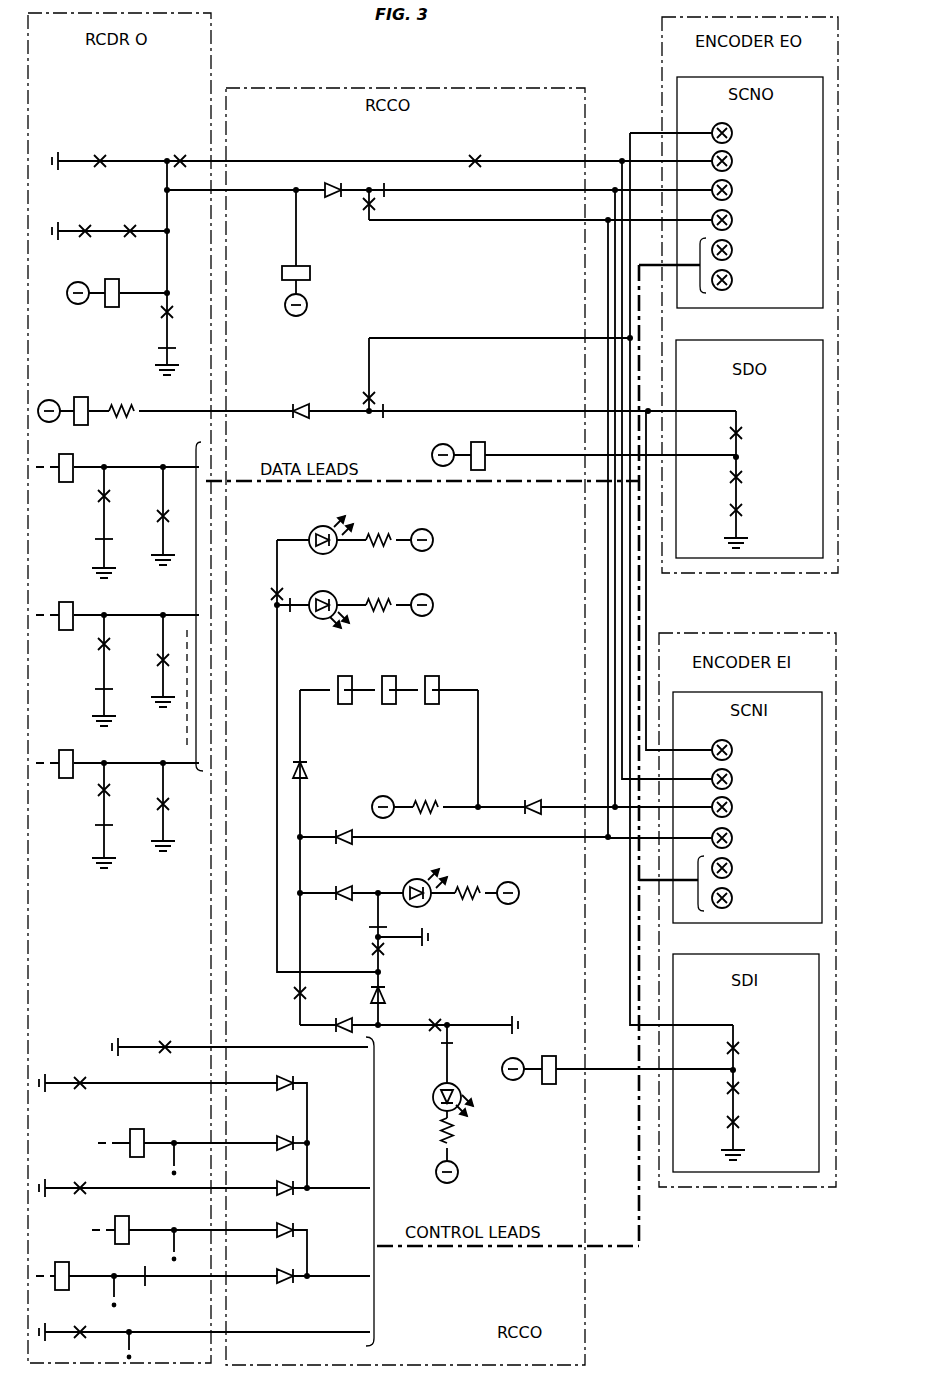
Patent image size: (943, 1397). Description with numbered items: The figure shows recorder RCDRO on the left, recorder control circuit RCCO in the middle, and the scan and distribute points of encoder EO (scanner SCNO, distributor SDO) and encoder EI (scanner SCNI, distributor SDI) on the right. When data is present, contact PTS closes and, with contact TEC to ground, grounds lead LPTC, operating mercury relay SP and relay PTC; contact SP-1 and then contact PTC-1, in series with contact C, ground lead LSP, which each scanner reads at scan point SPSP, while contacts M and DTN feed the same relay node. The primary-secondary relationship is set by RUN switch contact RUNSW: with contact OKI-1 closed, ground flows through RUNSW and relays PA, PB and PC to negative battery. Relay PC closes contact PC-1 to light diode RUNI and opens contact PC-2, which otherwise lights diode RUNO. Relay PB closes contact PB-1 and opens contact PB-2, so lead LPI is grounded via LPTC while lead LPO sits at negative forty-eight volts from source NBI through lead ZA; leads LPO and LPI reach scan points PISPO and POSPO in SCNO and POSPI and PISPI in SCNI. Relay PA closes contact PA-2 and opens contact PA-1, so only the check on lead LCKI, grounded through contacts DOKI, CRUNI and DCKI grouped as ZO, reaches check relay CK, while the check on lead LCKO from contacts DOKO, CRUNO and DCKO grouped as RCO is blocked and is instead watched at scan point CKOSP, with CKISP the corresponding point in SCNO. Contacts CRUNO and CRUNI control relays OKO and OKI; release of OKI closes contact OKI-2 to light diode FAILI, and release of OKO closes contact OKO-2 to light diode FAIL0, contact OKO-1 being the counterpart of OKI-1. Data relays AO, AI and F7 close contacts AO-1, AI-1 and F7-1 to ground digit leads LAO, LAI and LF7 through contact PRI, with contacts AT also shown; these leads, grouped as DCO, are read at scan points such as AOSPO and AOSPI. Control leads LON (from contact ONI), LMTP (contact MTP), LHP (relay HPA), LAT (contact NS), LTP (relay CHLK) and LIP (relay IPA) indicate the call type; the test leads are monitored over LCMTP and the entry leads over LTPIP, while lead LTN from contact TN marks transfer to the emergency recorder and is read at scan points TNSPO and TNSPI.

The C contact C is at (109, 151).
The PTC-1 contact PTC-1 is at (180, 149).
The LSP lead LSP is at (438, 460).
The SP-1 contact SP-1 is at (473, 148).
The LPTC lead LPTC is at (244, 181).
The PB-2 contact PB-2 is at (404, 182).
The LPO lead LPO is at (631, 489).
The M contact M is at (109, 221).
The DTN contact DTN is at (129, 220).
The PTC relay PTC is at (118, 283).
The PTS contact PTS is at (183, 312).
The TEC contact TEC is at (151, 357).
The signal present relay SP is at (283, 253).
The PB-1 contact PB-1 is at (364, 207).
The LPI lead LPI is at (540, 519).
The LCKI lead LCKI is at (551, 579).
The PA-2 contact PA-2 is at (348, 387).
The check relay CK is at (86, 400).
The PA-1 contact PA-1 is at (377, 423).
The LCKO lead LCKO is at (623, 571).
The DCKO contact DCKO is at (760, 434).
The CRUNO contact CRUNO is at (767, 478).
The DOKO contact DOKO is at (761, 511).
The RCO cable RCO is at (673, 430).
The OKO relay OKO is at (584, 446).
The AO relay AO is at (117, 458).
The LAO lead LAO is at (172, 455).
The AO contact AO-1 is at (119, 522).
The PRI contact PRI is at (76, 682).
The AT contact AT is at (160, 659).
The AI relay AI is at (117, 606).
The LAI lead LAI is at (170, 603).
The AI contact AI-1 is at (115, 670).
The F7 relay F7 is at (117, 754).
The LF7 lead LF7 is at (170, 751).
The F7 contact F7-1 is at (117, 815).
The RUNI light-emitting diode RUNI is at (355, 530).
The RUNO light-emitting diode RUNO is at (355, 600).
The PC-1 contact PC-1 is at (255, 594).
The PC-2 contact PC-2 is at (291, 613).
The PC relay PC is at (343, 701).
The PB relay PB is at (387, 678).
The PA relay PA is at (432, 701).
The NBI negative battery source NBI is at (423, 796).
The ZA lead ZA is at (548, 799).
The FAIL0 light-emitting diode FAIL0 is at (408, 881).
The OKO-1 contact OKO-1 is at (374, 931).
The OKO-2 contact OKO-2 is at (385, 953).
The RUN switch contact RUNSW is at (264, 994).
The OKI-1 contact OKI-1 is at (470, 1014).
The OKI-2 contact OKI-2 is at (445, 1044).
The FAILI light-emitting diode FAILI is at (428, 1104).
The OKI relay OKI is at (617, 1059).
The DCKI contact DCKI is at (754, 1049).
The CRUNI contact CRUNI is at (760, 1089).
The DOKI contact DOKI is at (754, 1123).
The ZO cable ZO is at (672, 1060).
The ONI contact ONI is at (240, 1038).
The LON lead LON is at (244, 1035).
The MTP contact MTP is at (158, 1075).
The LMTP lead LMTP is at (267, 1125).
The HPA relay HPA is at (187, 1139).
The LHP lead LHP is at (269, 1136).
The NS contact NS is at (158, 1224).
The LAT lead LAT is at (299, 1181).
The LCMTP lead LCMTP is at (343, 1172).
The CHLK relay CHLK is at (184, 1226).
The LTP lead LTP is at (267, 1242).
The IPA relay IPA is at (156, 1273).
The LIP lead LIP is at (299, 1269).
The LTPIP lead LTPIP is at (338, 1260).
The TN contact TN is at (204, 1331).
The LTN lead LTN is at (336, 1315).
The CKISP terminal CKISP is at (708, 133).
The SPSP scan point SPSP is at (746, 470).
The PISPO scan point PISPO is at (749, 190).
The POSPO scan point POSPO is at (753, 220).
The AOSPO scan point AOSPO is at (754, 250).
The TNSPO scan point TNSPO is at (753, 280).
The DCO cable DCO is at (664, 150).
The CKOSP scan point CKOSP is at (753, 750).
The POSPI scan point POSPI is at (749, 807).
The PISPI scan point PISPI is at (745, 838).
The AOSPI scan point AOSPI is at (750, 868).
The TNSPI scan point TNSPI is at (749, 898).